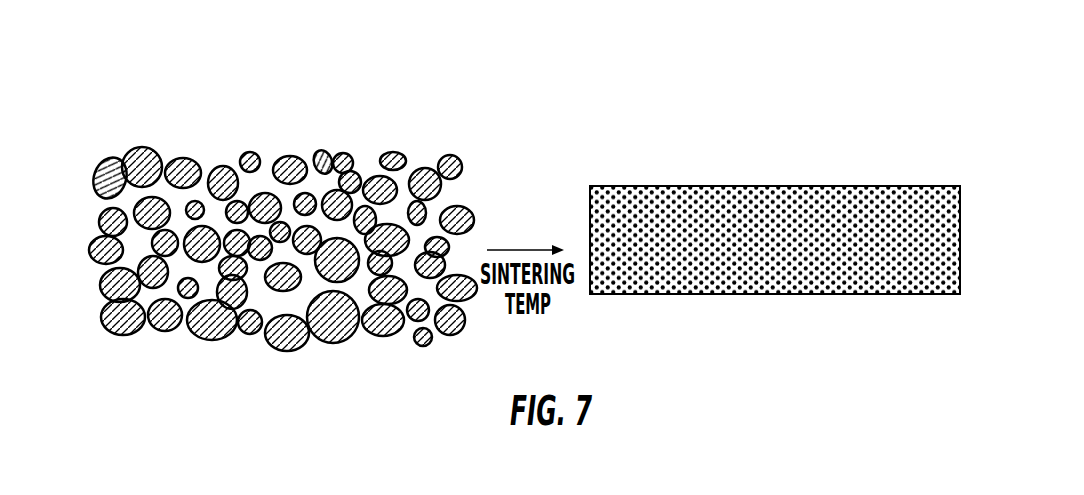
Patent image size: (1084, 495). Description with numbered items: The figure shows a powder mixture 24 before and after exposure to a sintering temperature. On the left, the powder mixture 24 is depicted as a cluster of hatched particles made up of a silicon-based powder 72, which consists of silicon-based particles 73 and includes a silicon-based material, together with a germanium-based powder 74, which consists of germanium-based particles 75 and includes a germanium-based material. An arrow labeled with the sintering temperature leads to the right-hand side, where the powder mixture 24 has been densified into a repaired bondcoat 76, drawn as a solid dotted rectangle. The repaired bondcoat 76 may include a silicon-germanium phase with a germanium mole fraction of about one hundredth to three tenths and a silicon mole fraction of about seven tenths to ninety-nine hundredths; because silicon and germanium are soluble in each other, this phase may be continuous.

The powder mixture 24 is at (141, 104).
The silicon-based powder 72 is at (250, 152).
The silicon-based particles 73 is at (462, 209).
The germanium-based powder 74 is at (426, 172).
The germanium-based particles 75 is at (305, 193).
The repaired bondcoat 76 is at (760, 186).